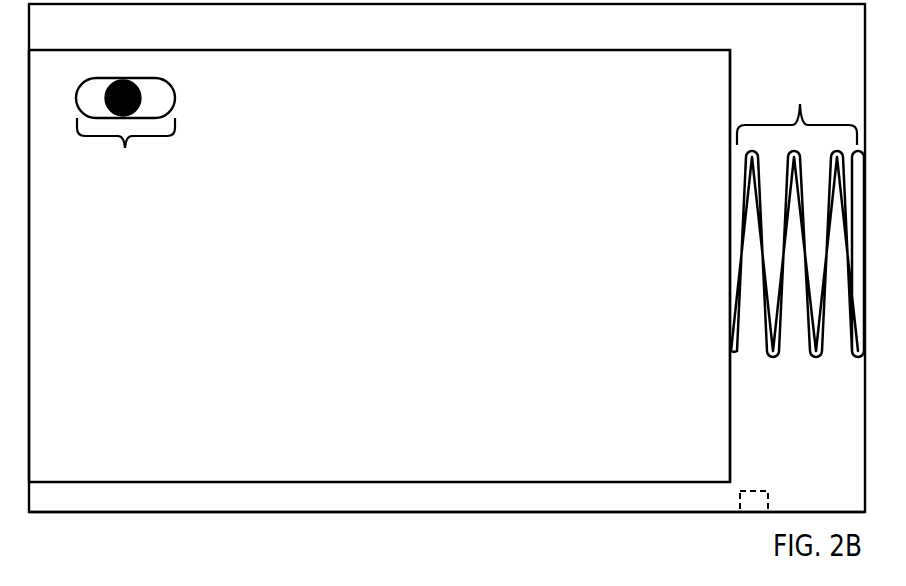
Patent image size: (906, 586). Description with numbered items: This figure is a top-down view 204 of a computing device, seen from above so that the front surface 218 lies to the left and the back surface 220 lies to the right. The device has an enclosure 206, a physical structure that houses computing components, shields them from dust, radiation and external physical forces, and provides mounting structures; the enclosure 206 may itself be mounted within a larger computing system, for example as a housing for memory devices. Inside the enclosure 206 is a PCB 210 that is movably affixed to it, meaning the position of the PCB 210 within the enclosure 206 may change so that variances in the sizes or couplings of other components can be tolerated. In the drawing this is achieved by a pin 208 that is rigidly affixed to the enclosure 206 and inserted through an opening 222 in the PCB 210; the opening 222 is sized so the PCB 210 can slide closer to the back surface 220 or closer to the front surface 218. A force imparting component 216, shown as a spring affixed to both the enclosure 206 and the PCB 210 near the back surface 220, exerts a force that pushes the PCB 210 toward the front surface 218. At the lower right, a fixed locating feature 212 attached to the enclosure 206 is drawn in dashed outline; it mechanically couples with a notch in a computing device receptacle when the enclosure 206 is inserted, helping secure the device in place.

The top-down view 204 is at (461, 521).
The enclosure 206 is at (505, 32).
The pin 208 is at (129, 75).
The PCB 210 is at (417, 276).
The fixed locating feature 212 is at (754, 483).
The force imparting component 216 is at (862, 95).
The front surface 218 is at (178, 270).
The back surface 220 is at (860, 429).
The opening 222 is at (152, 199).